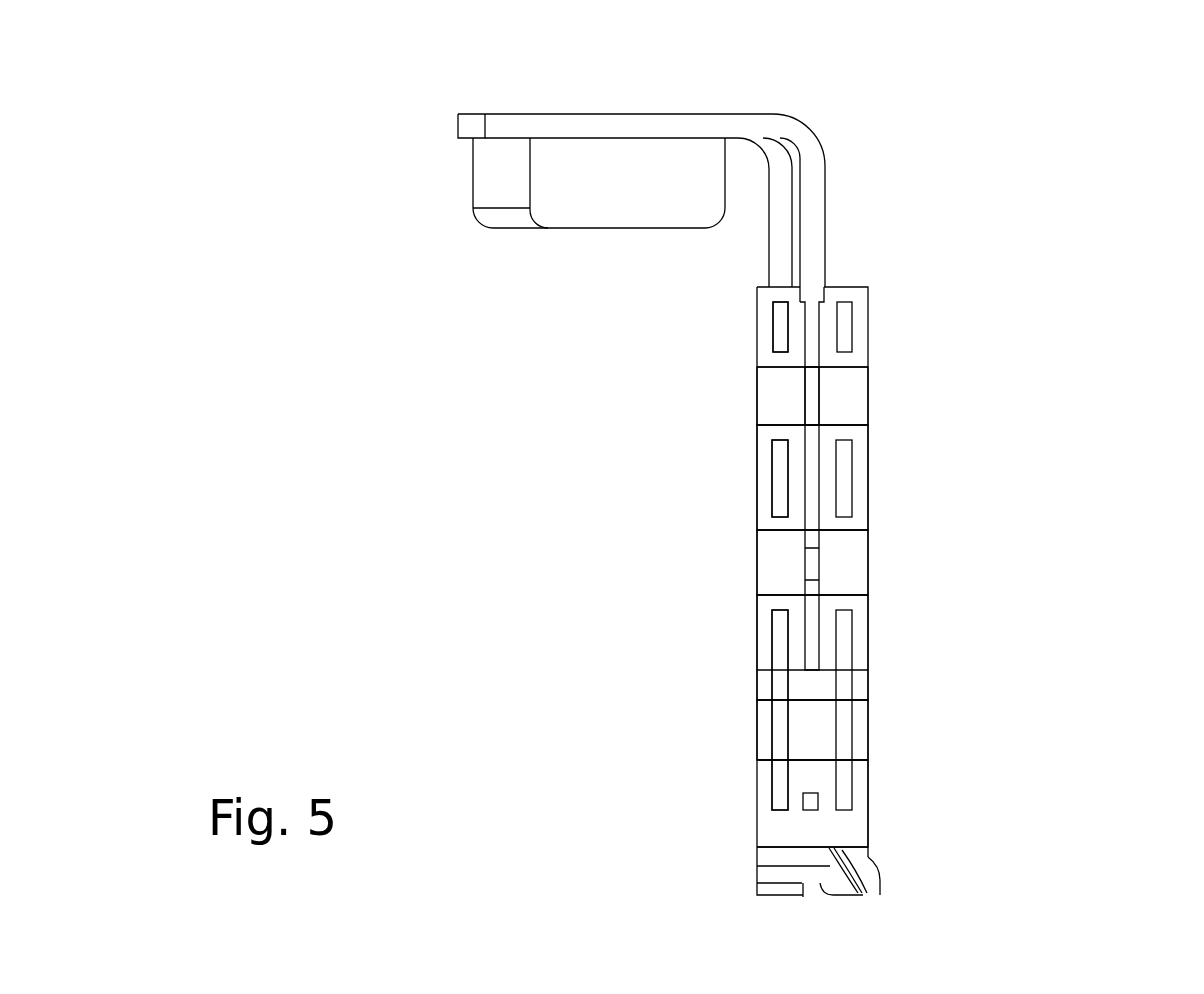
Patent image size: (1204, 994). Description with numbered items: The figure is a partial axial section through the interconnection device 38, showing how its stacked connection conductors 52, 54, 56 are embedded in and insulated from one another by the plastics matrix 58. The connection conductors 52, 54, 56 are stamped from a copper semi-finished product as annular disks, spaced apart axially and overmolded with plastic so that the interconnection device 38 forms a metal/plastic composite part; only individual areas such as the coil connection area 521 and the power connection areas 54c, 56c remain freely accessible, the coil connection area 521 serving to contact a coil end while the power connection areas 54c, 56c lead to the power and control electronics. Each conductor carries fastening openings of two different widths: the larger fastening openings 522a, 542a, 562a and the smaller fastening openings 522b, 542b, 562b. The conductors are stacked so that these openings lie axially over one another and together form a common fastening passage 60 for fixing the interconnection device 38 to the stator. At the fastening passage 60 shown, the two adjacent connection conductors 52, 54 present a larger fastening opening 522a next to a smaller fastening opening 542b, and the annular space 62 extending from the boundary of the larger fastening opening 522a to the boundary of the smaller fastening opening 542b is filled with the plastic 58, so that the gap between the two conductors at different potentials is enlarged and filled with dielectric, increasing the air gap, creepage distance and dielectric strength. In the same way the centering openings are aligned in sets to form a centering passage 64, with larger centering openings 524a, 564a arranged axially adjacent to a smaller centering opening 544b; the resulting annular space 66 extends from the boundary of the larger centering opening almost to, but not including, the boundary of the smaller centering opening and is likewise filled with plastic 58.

The interconnection device 38 is at (1036, 524).
The connection conductor 52 is at (845, 318).
The connection conductor 54 is at (820, 215).
The power connection area 54c is at (648, 130).
The connection conductor 56 is at (775, 262).
The power connection area 56c is at (472, 123).
The plastics matrix 58 is at (845, 832).
The fastening passage 60 is at (853, 395).
The annular space 62 is at (845, 435).
The centering passage 64 is at (853, 581).
The annular space 66 is at (778, 603).
The coil connection area 521 is at (873, 888).
The larger fastening opening 522a is at (845, 360).
The smaller fastening opening 522b is at (843, 710).
The larger centering opening 524a is at (842, 525).
The larger fastening opening 542a is at (800, 778).
The smaller fastening opening 542b is at (813, 388).
The smaller centering opening 544b is at (812, 566).
The larger fastening opening 562a is at (780, 358).
The smaller fastening opening 562b is at (778, 734).
The larger centering opening 564a is at (780, 522).